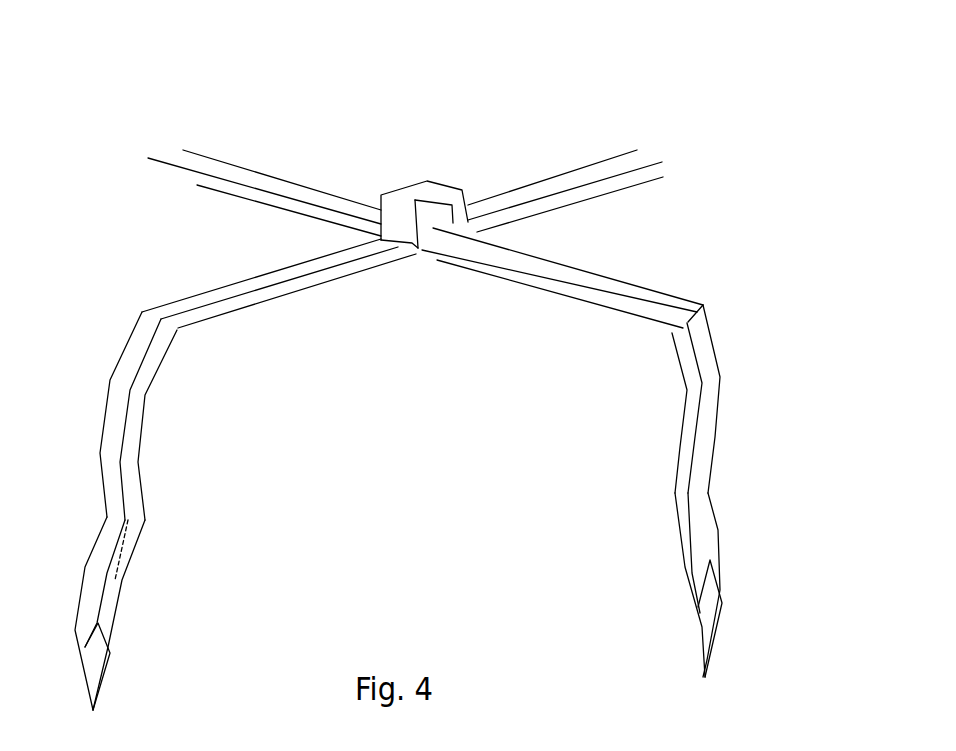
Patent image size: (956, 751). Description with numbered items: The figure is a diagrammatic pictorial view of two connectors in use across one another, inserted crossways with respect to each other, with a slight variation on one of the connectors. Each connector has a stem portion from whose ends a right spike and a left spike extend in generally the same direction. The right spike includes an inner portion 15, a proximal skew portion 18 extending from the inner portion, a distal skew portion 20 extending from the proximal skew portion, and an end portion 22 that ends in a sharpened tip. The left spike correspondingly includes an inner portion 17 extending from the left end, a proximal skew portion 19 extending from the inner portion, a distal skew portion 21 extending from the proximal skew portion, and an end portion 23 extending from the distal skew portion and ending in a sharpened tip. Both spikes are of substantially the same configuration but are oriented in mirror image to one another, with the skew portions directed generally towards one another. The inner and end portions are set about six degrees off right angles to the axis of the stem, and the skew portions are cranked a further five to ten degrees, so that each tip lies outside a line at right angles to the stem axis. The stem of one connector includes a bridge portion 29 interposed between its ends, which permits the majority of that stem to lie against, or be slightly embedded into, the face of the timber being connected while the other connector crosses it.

The inner portion 15 is at (215, 268).
The inner portion 17 is at (369, 257).
The proximal skew portion 18 is at (266, 416).
The proximal skew portion 19 is at (410, 412).
The distal skew portion 20 is at (495, 163).
The distal skew portion 21 is at (600, 150).
The end portion 22 is at (255, 613).
The end portion 23 is at (398, 601).
The bridge portion 29 is at (414, 200).